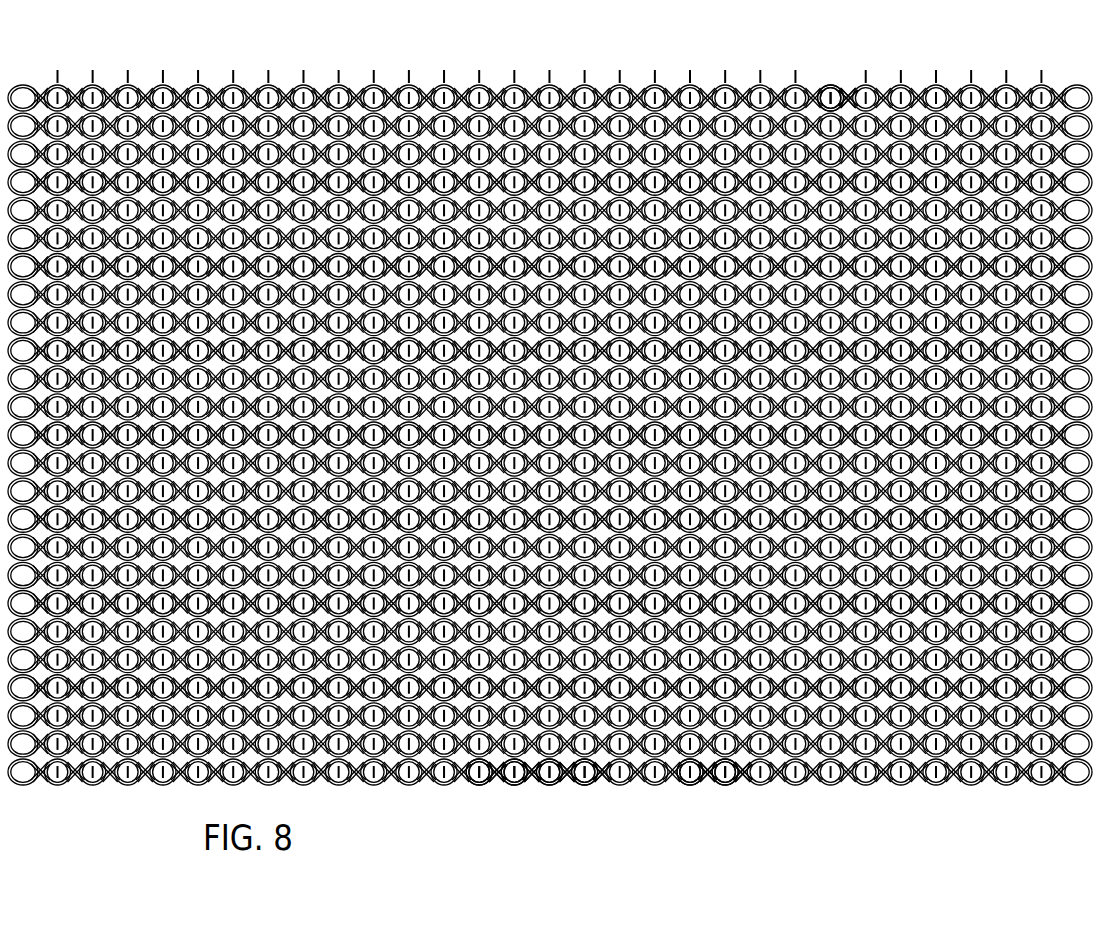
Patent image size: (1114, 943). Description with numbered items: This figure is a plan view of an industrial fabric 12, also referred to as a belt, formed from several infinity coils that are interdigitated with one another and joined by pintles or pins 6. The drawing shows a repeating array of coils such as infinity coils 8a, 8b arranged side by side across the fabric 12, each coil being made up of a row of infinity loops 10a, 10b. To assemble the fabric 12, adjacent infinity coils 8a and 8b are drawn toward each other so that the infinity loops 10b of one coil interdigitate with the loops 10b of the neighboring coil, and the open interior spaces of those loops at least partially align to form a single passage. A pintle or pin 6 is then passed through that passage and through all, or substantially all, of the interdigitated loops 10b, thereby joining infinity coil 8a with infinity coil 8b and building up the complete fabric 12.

The industrial fabric 12 is at (482, 57).
The pintle or pin 6 is at (832, 84).
The infinity coil 8a is at (468, 787).
The infinity coil 8b is at (540, 805).
The infinity loop 10a is at (693, 787).
The infinity loop 10b is at (730, 787).